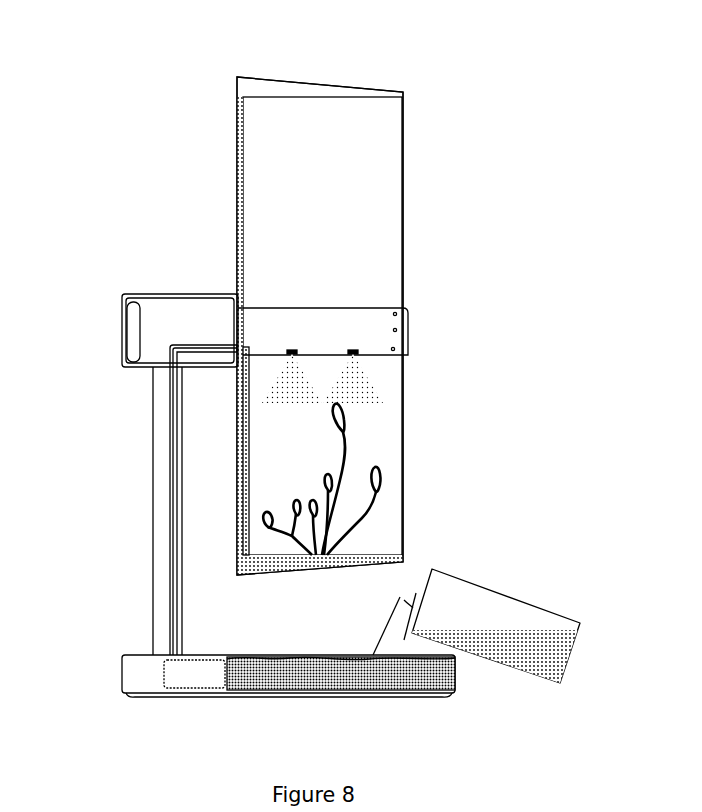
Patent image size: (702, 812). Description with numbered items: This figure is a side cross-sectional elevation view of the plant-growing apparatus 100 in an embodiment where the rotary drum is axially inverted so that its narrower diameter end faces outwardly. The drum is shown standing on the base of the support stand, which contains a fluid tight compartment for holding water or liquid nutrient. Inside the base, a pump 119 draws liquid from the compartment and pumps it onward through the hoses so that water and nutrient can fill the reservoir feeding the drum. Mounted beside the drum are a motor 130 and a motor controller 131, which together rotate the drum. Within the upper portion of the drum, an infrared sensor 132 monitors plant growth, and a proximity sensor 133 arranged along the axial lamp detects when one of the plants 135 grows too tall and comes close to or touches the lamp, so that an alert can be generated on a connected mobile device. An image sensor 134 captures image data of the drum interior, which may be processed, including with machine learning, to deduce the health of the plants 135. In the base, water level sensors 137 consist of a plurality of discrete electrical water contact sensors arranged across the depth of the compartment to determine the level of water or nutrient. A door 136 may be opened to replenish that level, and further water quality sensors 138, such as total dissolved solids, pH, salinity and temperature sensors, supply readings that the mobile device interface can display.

The apparatus 100 is at (455, 79).
The pump 119 is at (183, 672).
The motor 130 is at (180, 302).
The motor controller 131 is at (128, 326).
The infrared sensor 132 is at (292, 350).
The proximity sensor 133 is at (324, 352).
The image sensor 134 is at (408, 331).
The plants 135 is at (376, 500).
The door 136 is at (388, 611).
The water level sensors 137 is at (288, 680).
The water quality sensors 138 is at (450, 682).